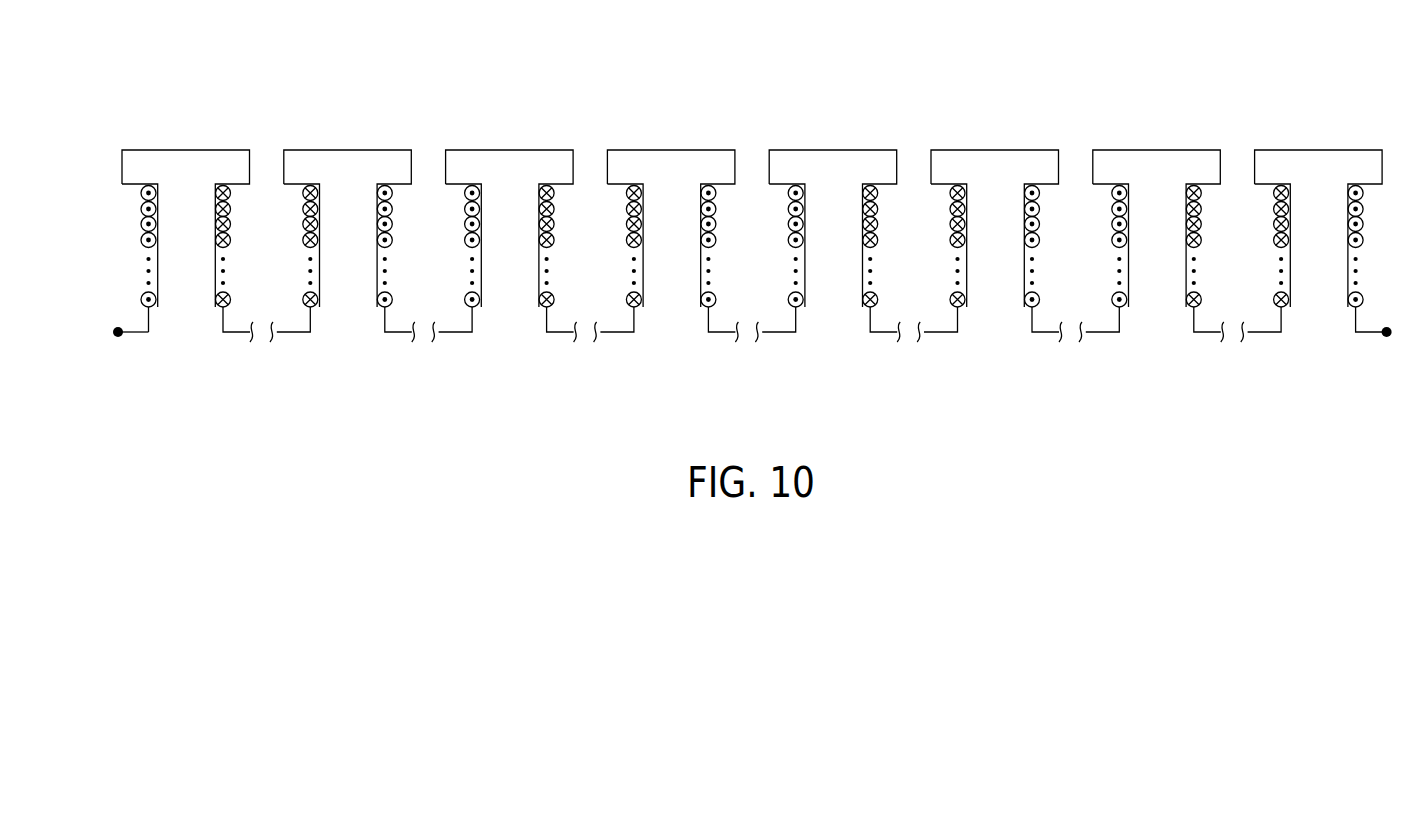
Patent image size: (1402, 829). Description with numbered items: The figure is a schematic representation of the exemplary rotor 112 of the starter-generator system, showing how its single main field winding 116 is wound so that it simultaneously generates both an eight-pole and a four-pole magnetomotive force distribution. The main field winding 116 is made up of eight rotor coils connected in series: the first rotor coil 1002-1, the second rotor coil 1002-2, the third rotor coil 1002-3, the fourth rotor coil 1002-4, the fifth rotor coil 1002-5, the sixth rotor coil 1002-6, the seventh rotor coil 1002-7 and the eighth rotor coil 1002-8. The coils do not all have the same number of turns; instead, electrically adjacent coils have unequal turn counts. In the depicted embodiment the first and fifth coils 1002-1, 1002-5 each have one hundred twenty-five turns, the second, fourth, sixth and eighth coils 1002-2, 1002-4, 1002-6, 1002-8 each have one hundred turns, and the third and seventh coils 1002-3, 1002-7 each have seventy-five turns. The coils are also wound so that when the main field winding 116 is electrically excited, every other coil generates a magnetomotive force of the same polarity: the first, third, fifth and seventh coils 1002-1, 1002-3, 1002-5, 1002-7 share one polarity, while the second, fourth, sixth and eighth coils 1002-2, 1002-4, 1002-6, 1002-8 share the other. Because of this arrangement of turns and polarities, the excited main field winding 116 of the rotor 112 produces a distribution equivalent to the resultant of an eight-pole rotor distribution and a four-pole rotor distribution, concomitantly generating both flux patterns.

The rotor 112 is at (728, 197).
The main field winding 116 is at (139, 334).
The first rotor coil 1002-1 is at (168, 223).
The second rotor coil 1002-2 is at (330, 223).
The third rotor coil 1002-3 is at (492, 223).
The fourth rotor coil 1002-4 is at (653, 223).
The fifth rotor coil 1002-5 is at (815, 223).
The sixth rotor coil 1002-6 is at (977, 223).
The seventh rotor coil 1002-7 is at (1139, 223).
The eighth rotor coil 1002-8 is at (1294, 221).